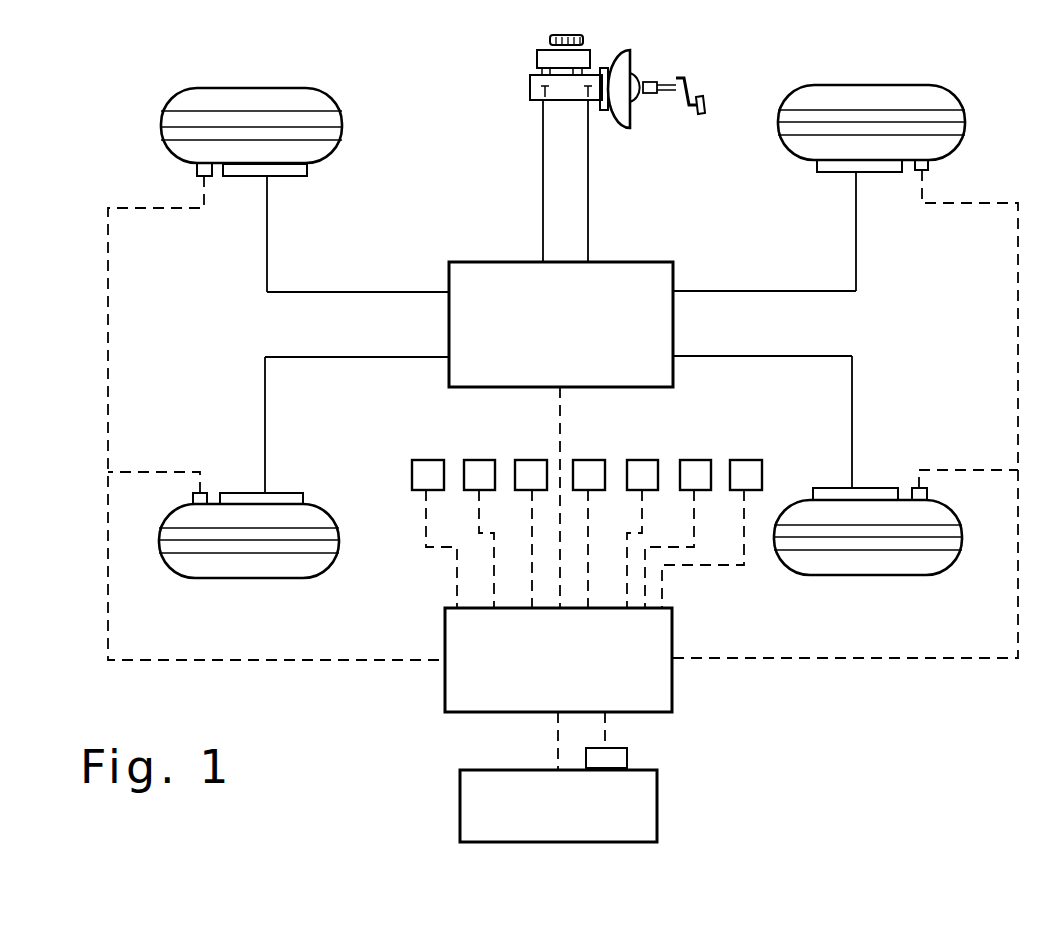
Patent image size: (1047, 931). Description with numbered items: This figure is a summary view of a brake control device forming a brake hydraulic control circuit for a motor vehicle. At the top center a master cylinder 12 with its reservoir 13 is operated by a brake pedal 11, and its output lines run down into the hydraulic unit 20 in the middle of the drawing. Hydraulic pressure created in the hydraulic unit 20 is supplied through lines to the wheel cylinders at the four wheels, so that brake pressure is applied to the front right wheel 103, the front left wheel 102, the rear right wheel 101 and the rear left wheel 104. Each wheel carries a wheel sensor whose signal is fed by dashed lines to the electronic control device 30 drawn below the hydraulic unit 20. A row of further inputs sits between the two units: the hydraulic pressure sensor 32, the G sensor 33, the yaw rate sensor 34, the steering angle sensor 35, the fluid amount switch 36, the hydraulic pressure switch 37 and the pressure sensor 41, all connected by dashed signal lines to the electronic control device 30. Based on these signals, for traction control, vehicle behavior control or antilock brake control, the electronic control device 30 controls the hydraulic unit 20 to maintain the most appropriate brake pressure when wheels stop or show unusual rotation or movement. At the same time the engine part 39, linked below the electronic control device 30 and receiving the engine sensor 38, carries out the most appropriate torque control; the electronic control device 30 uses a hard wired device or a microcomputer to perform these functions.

The brake pedal 11 is at (688, 110).
The master cylinder 12 is at (530, 88).
The reservoir 13 is at (536, 63).
The hydraulic unit 20 is at (673, 337).
The electronic control device 30 is at (672, 640).
The hydraulic pressure sensor 32 is at (426, 460).
The G sensor 33 is at (480, 460).
The yaw rate sensor 34 is at (526, 460).
The steering angle sensor 35 is at (588, 460).
The fluid amount switch 36 is at (640, 460).
The hydraulic pressure switch 37 is at (696, 460).
The engine sensor 38 is at (628, 760).
The engine part 39 is at (657, 813).
The pressure sensor 41 is at (748, 460).
The rear right wheel 101 is at (868, 85).
The front left wheel 102 is at (250, 578).
The front right wheel 103 is at (253, 87).
The rear left wheel 104 is at (867, 575).